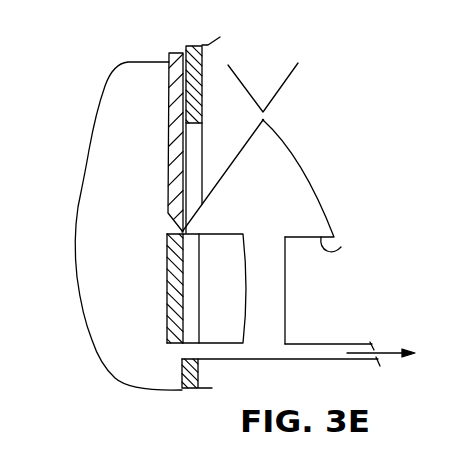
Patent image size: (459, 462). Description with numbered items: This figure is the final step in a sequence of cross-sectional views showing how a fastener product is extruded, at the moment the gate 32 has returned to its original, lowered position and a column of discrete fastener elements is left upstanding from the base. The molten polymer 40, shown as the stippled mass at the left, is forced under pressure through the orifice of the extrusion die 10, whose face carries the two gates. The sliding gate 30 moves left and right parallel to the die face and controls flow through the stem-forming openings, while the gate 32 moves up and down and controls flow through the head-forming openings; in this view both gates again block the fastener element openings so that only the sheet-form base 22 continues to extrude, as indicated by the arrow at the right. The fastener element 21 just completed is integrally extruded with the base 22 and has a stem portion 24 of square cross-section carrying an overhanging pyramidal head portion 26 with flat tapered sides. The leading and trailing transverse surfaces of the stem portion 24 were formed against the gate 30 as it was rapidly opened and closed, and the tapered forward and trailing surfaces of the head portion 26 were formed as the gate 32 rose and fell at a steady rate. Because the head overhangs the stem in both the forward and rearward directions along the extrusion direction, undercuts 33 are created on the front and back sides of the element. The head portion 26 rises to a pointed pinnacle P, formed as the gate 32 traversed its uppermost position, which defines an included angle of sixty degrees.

The extrusion die 10 is at (192, 152).
The fastener element 21 is at (298, 243).
The sheet-form base 22 is at (345, 345).
The stem portion 24 is at (275, 299).
The head portion 26 is at (273, 178).
The sliding gate 30 is at (165, 282).
The gate 32 is at (178, 68).
The undercut 33 is at (341, 247).
The molten polymer 40 is at (110, 156).
The pointed pinnacle P is at (265, 120).